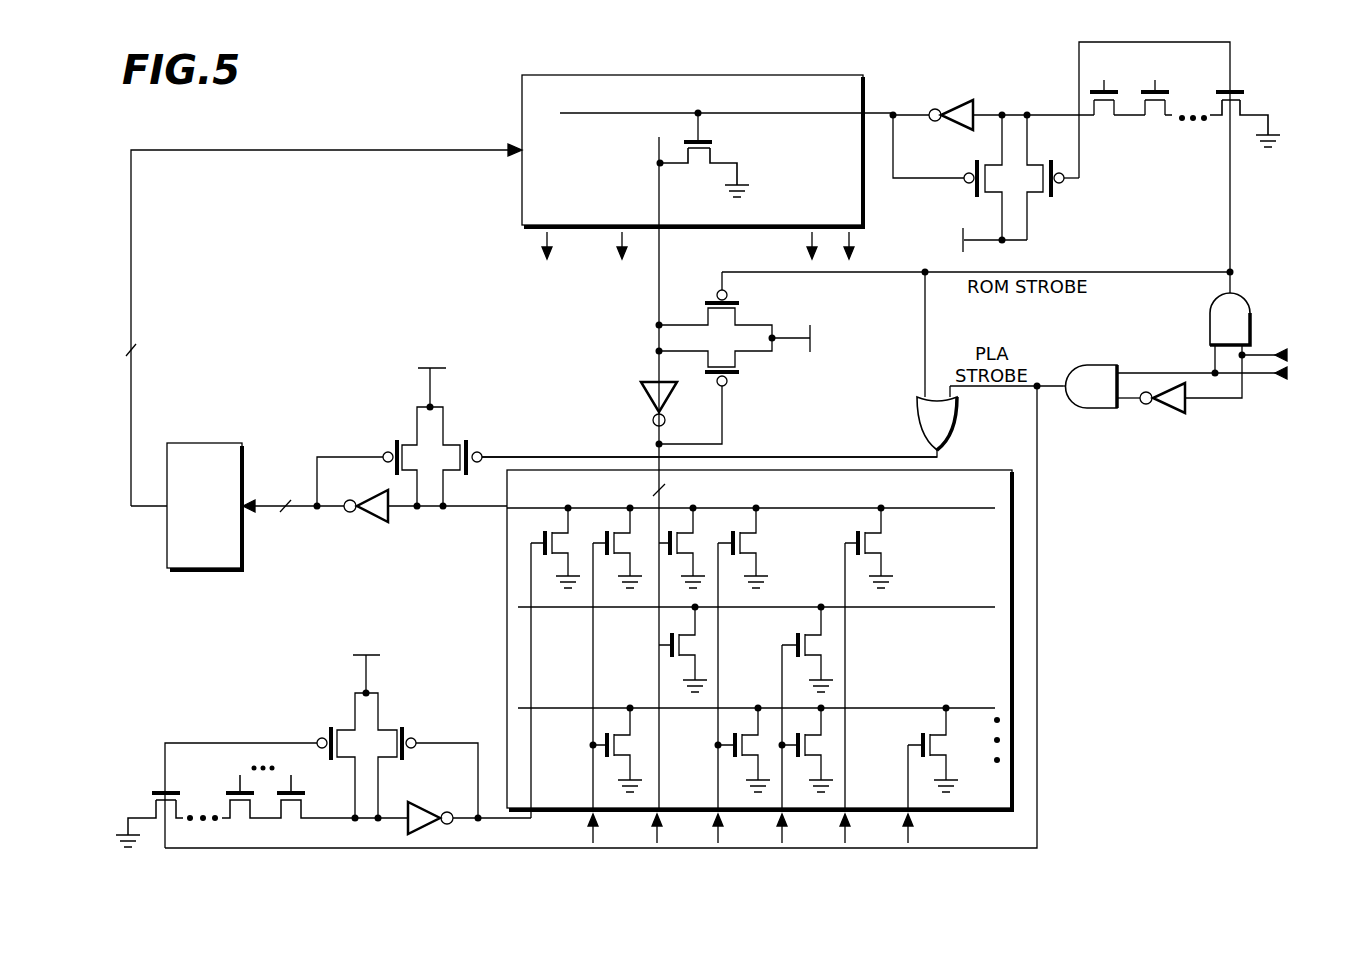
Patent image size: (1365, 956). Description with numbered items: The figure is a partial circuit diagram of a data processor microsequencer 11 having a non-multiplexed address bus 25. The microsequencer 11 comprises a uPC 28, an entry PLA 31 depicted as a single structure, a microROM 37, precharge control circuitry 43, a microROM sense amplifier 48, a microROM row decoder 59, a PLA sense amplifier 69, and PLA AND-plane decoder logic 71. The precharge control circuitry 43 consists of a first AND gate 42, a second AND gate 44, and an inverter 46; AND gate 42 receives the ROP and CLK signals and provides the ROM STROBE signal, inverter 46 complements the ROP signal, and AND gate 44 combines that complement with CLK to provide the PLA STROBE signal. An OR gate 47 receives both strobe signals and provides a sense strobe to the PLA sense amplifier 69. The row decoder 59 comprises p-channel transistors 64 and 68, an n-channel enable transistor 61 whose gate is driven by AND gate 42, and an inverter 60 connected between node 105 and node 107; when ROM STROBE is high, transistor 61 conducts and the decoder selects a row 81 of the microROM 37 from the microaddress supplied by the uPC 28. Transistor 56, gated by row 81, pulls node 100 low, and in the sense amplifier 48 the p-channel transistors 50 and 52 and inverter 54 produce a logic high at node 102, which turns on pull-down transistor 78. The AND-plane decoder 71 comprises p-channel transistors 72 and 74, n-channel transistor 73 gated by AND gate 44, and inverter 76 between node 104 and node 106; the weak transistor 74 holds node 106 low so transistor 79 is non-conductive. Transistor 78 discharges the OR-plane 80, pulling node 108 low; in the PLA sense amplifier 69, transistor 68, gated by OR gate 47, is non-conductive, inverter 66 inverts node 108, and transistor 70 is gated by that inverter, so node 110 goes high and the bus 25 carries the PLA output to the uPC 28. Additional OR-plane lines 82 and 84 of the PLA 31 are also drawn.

The data processor microsequencer 11 is at (375, 128).
The microROM 37 is at (521, 100).
The row 81 is at (611, 118).
The transistor 56 is at (712, 149).
The node 107 is at (893, 112).
The inverter 60 is at (950, 110).
The node 105 is at (1027, 112).
The p-channel transistor 64 is at (996, 193).
The p-channel transistor 68 is at (1032, 193).
The microROM row decoder 59 is at (1157, 167).
The n-channel enable transistor 61 is at (1240, 118).
The node 100 is at (657, 325).
The p-channel transistor 50 is at (738, 319).
The p-channel transistor 52 is at (738, 362).
The inverter 54 is at (645, 401).
The node 102 is at (656, 444).
The microROM sense amplifier 48 is at (812, 372).
The OR gate 47 is at (917, 418).
The first AND gate 42 is at (1208, 318).
The second AND gate 44 is at (1086, 409).
The inverter 46 is at (1163, 413).
The precharge control circuitry 43 is at (1194, 438).
The entry PLA 31 is at (985, 470).
The uPC 28 is at (218, 442).
The non-multiplexed address bus 25 is at (279, 492).
The PLA sense amplifier 69 is at (396, 342).
The p-channel transistor 70 is at (398, 440).
The inverter 66 is at (375, 522).
The node 110 is at (317, 512).
The node 108 is at (443, 512).
The PLA AND-plane decoder logic 71 is at (313, 614).
The p-channel transistor 72 is at (336, 730).
The p-channel transistor 74 is at (390, 730).
The n-channel transistor 73 is at (152, 808).
The inverter 76 is at (435, 801).
The node 104 is at (352, 822).
The node 106 is at (480, 822).
The transistor 79 is at (575, 545).
The pull-down transistor 78 is at (665, 555).
The OR-plane 80 is at (962, 508).
The PLA OR-plane line 82 is at (962, 608).
The PLA OR-plane line 84 is at (968, 708).